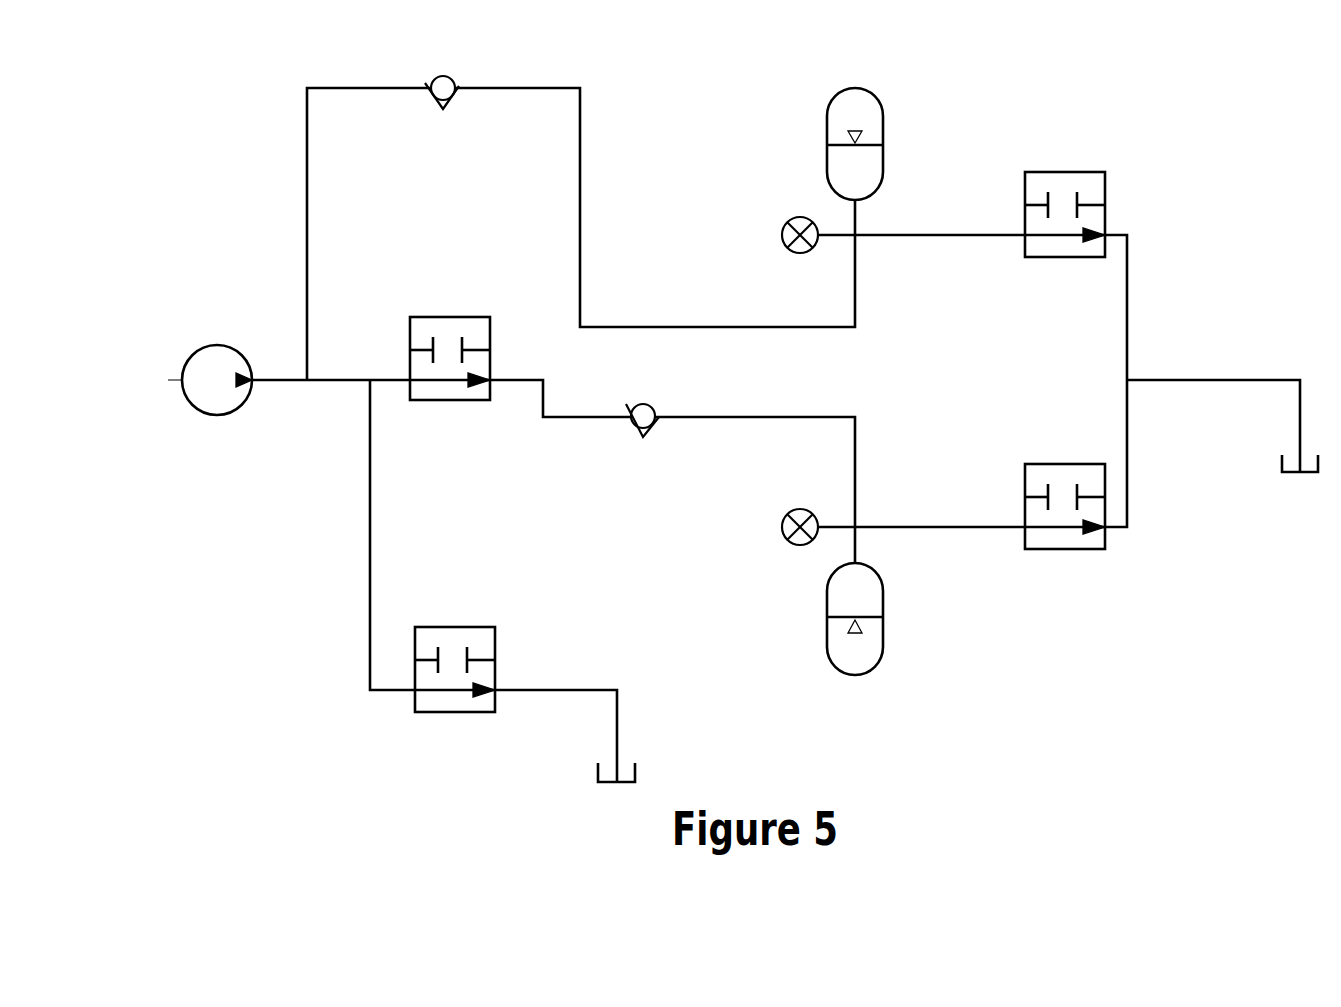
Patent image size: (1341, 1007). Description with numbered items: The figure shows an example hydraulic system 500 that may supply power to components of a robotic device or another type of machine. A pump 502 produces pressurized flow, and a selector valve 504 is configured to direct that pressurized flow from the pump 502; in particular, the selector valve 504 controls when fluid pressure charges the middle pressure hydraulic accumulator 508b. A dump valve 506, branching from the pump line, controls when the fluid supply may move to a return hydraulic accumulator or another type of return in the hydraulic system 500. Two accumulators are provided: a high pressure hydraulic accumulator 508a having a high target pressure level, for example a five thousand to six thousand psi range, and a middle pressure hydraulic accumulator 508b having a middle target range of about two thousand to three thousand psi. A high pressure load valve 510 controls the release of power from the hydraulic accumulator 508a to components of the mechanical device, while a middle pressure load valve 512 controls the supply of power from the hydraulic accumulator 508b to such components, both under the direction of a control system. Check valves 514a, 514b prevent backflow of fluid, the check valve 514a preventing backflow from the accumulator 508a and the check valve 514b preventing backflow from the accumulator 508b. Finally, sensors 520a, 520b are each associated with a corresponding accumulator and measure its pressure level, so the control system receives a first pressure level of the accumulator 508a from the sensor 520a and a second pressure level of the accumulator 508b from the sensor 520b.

The hydraulic system 500 is at (264, 147).
The pump 502 is at (243, 397).
The selector valve 504 is at (448, 400).
The dump valve 506 is at (452, 712).
The high pressure hydraulic accumulator 508a is at (827, 120).
The middle pressure hydraulic accumulator 508b is at (827, 617).
The high pressure load valve 510 is at (1063, 257).
The middle pressure load valve 512 is at (1062, 549).
The check valve 514a is at (448, 77).
The check valve 514b is at (656, 425).
The sensor 520a is at (782, 239).
The sensor 520b is at (782, 530).